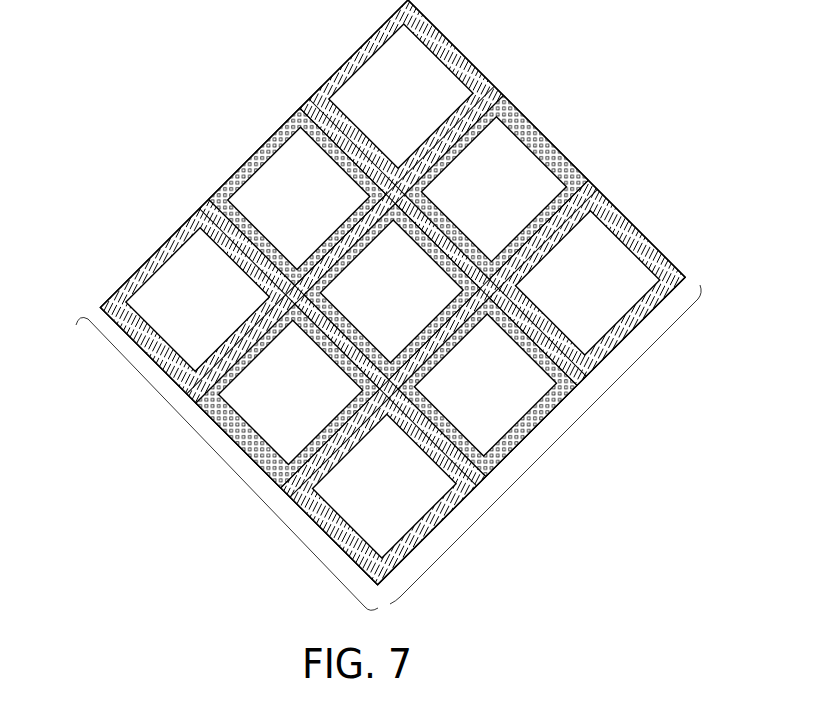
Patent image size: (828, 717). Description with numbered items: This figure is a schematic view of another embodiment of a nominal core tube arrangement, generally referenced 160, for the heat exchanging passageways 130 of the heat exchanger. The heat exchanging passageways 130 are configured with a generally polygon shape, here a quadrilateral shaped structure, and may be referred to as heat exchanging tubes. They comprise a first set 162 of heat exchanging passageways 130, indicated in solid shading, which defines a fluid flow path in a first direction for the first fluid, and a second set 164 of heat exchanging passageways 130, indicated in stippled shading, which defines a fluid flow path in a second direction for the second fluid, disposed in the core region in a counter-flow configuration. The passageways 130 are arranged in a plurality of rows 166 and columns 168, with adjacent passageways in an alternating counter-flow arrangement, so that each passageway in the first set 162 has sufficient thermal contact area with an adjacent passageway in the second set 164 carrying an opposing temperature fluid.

The heat exchanging passageways arrangement 160 is at (157, 118).
The first set of heat exchanging passageways 162 is at (148, 255).
The second set of heat exchanging passageways 164 is at (556, 146).
The heat exchanging passageway 130 is at (645, 236).
The rows 166 is at (562, 448).
The columns 168 is at (218, 460).